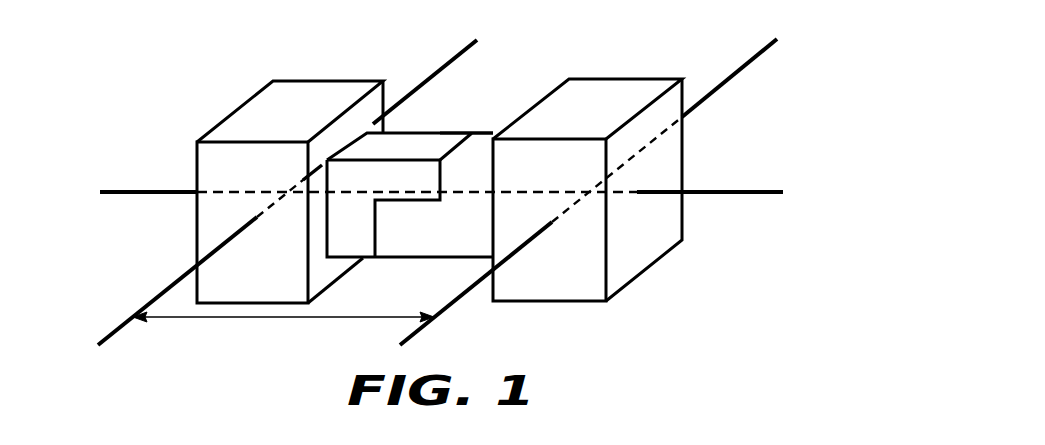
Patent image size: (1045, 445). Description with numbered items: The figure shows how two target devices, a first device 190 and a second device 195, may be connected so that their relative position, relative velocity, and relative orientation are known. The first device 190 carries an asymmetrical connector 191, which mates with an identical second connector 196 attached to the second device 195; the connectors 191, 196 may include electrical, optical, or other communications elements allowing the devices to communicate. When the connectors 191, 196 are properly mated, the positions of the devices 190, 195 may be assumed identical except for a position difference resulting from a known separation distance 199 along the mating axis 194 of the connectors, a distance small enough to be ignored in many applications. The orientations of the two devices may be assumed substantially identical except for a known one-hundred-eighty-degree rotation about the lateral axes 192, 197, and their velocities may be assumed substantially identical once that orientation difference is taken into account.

The first device 190 is at (220, 192).
The asymmetrical connector 191 is at (411, 137).
The lateral axis 192 is at (465, 47).
The mating axis 194 is at (698, 190).
The second device 195 is at (643, 252).
The second connector 196 is at (487, 133).
The lateral axis 197 is at (763, 44).
The separation distance 199 is at (283, 317).